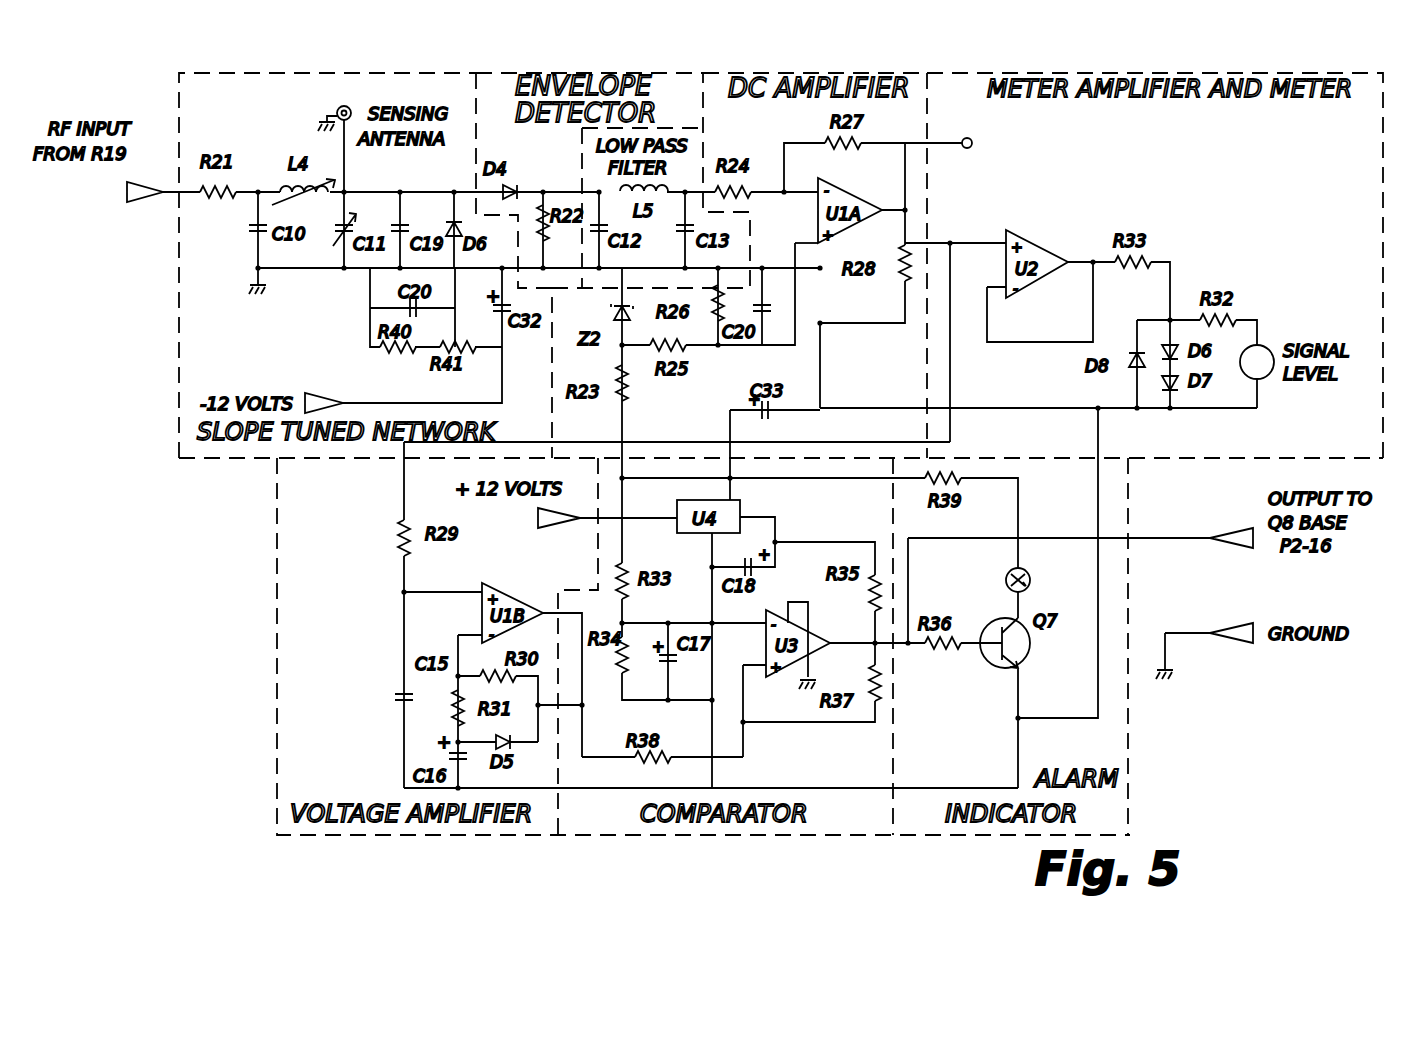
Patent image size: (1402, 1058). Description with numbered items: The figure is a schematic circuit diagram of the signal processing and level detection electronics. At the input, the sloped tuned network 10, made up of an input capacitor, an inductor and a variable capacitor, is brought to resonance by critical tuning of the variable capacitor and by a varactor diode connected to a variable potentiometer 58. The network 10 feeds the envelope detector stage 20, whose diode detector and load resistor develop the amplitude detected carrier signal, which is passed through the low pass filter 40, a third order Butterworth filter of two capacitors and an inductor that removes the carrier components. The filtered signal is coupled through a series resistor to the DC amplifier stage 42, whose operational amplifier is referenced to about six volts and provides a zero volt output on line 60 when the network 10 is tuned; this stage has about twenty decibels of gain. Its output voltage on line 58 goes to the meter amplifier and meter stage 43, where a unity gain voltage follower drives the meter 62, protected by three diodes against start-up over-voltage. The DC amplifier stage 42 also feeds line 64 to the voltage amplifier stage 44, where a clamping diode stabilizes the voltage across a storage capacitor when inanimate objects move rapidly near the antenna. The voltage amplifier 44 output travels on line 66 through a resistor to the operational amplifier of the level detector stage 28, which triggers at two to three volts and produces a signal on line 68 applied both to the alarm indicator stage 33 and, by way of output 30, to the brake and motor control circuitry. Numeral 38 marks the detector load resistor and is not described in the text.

The sloped tuned network 10 is at (276, 73).
The envelope detector stage 20 is at (483, 73).
The detector load resistor R22 38 is at (578, 188).
The low pass filter 40 is at (705, 150).
The DC amplifier stage 42 is at (712, 73).
The meter amplifier and meter stage 43 is at (935, 75).
The variable potentiometer 58 is at (905, 178).
The line 60 is at (1087, 262).
The meter 62 is at (1262, 345).
The line 64 is at (868, 442).
The output 30 is at (1143, 538).
The line 68 is at (892, 648).
The voltage amplifier stage 44 is at (508, 837).
The line 66 is at (605, 758).
The level detector stage 28 is at (760, 837).
The alarm indicator stage 33 is at (970, 837).